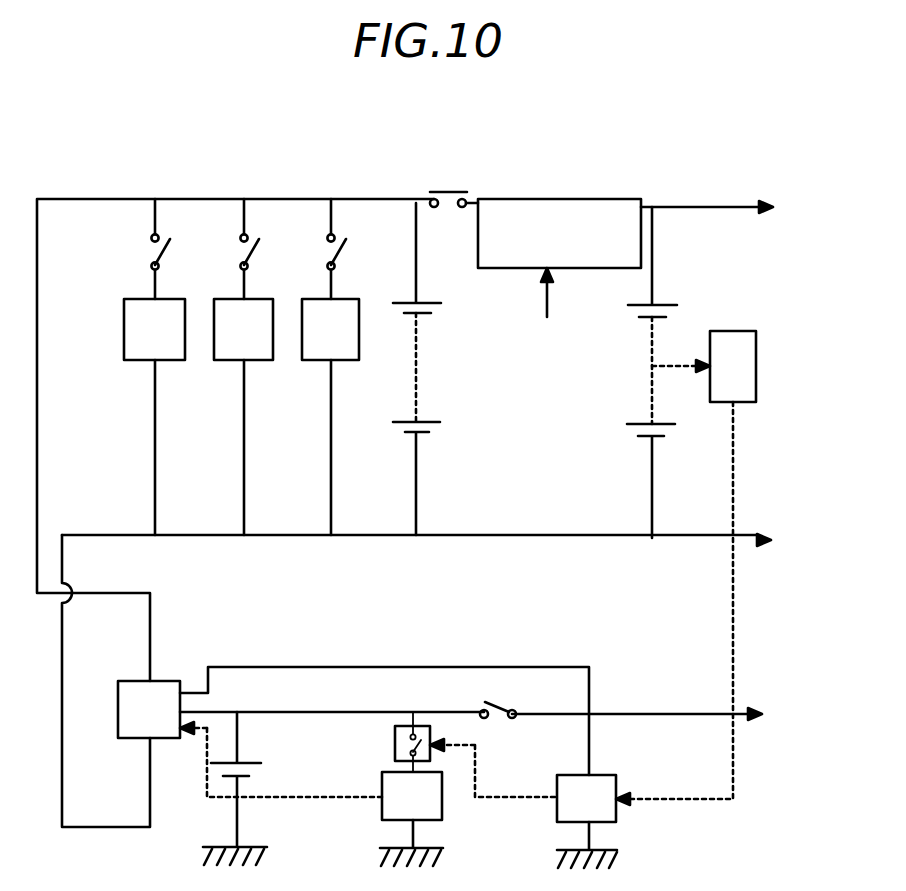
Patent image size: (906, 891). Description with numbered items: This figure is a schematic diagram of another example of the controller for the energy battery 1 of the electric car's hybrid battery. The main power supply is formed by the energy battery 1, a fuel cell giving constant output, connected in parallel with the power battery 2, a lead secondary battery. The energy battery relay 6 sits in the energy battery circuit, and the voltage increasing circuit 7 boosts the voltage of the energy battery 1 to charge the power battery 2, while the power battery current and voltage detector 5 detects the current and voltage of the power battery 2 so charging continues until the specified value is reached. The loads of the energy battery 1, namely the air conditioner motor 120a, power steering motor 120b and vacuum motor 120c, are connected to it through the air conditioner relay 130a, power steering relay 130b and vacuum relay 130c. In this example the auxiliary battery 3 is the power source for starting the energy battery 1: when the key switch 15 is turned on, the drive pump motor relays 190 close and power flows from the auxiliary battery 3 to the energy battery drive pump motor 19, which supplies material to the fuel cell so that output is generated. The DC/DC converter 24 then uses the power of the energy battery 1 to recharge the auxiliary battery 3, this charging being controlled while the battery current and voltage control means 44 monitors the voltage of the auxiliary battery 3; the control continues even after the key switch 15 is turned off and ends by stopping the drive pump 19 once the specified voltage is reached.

The energy battery 1 is at (400, 395).
The power battery 2 is at (635, 398).
The auxiliary battery 3 is at (258, 772).
The power battery current and voltage detector 5 is at (757, 372).
The energy battery relay 6 is at (450, 188).
The voltage increasing circuit 7 is at (550, 192).
The key switch 15 is at (500, 722).
The energy battery drive pump motor 19 is at (442, 820).
The DC/DC converter 24 is at (162, 680).
The battery current and voltage control means 44 is at (617, 822).
The air conditioner motor 120a is at (125, 362).
The power steering motor 120b is at (215, 362).
The vacuum motor 120c is at (303, 362).
The air conditioner relay 130a is at (148, 253).
The power steering relay 130b is at (237, 253).
The vacuum relay 130c is at (325, 253).
The drive pump motor relays 190 is at (394, 755).